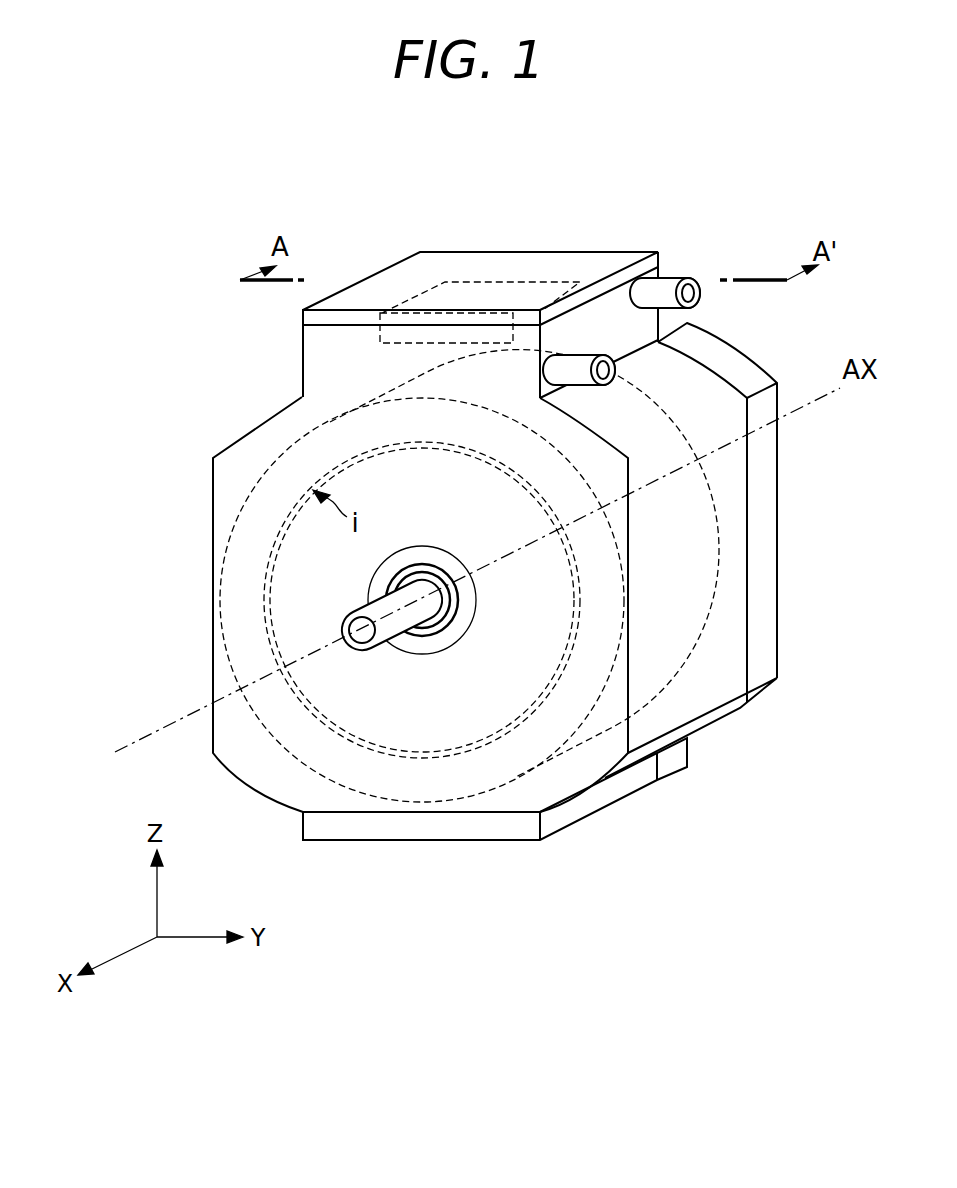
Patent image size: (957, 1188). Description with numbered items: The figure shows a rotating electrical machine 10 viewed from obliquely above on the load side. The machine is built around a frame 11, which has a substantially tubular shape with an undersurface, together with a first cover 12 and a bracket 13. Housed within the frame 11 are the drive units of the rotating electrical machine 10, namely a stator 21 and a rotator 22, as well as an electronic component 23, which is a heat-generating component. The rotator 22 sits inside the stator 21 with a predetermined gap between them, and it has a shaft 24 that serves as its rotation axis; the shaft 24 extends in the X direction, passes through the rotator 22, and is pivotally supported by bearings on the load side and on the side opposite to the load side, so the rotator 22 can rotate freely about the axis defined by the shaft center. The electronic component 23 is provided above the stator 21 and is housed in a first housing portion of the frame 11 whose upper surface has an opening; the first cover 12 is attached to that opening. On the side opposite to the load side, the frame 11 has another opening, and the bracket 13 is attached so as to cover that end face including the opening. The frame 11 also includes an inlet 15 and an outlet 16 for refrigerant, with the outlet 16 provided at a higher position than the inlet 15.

The rotating electrical machine 10 is at (131, 224).
The frame 11 is at (248, 424).
The first cover 12 is at (587, 252).
The bracket 13 is at (757, 553).
The inlet 15 is at (583, 364).
The outlet 16 is at (667, 287).
The stator 21 is at (255, 528).
The rotator 22 is at (297, 584).
The electronic component 23 is at (408, 298).
The shaft 24 is at (403, 632).